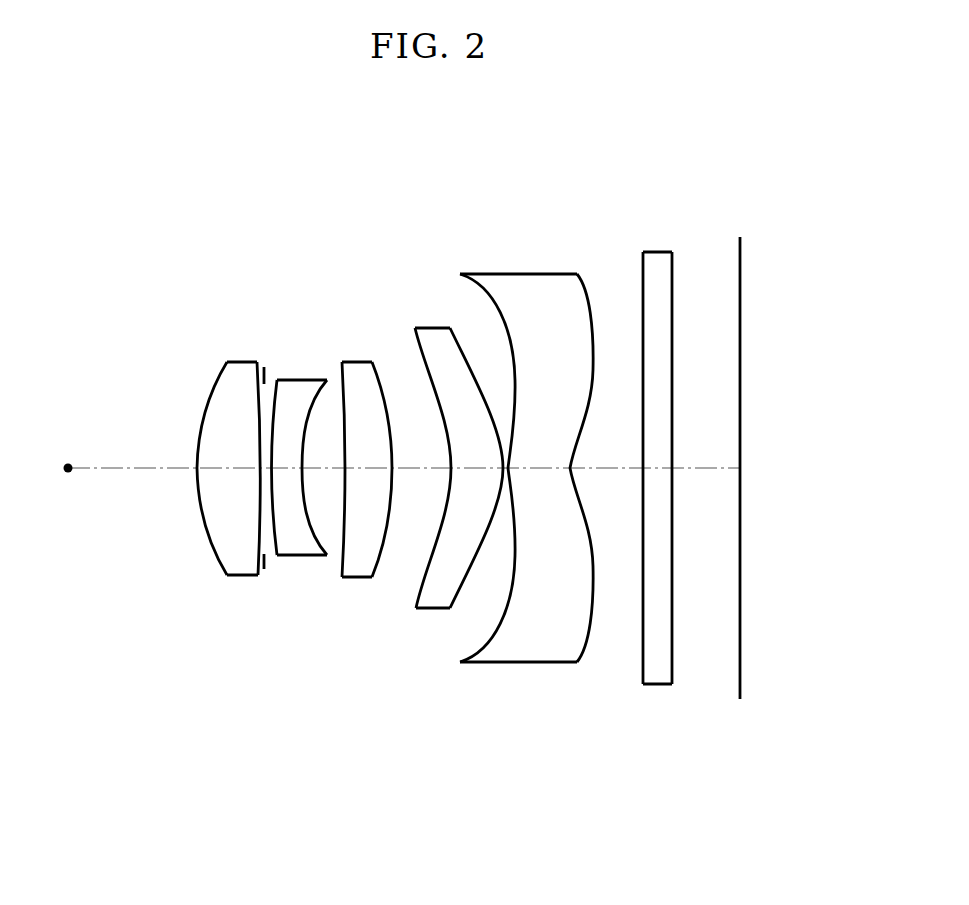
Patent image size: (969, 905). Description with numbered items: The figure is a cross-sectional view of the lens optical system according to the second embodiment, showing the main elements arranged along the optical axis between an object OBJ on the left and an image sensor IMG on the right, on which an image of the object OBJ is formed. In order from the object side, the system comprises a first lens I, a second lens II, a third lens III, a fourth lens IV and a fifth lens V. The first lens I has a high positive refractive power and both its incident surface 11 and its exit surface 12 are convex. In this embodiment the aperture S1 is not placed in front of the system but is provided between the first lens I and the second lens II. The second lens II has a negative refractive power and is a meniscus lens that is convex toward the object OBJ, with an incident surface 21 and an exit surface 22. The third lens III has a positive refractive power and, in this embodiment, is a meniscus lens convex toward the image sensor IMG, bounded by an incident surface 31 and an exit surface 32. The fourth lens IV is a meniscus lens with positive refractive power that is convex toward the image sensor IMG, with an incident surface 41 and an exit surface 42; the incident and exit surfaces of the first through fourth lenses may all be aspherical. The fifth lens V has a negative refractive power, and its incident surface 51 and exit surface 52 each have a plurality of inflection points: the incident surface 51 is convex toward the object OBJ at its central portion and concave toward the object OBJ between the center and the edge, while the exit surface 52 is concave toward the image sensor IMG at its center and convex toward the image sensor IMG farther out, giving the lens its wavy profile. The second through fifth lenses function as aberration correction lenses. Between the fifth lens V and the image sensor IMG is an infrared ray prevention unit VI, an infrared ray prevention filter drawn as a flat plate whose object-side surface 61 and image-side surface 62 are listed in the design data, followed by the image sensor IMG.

The object OBJ is at (68, 463).
The first lens I is at (211, 481).
The incident surface of the first lens 11 is at (208, 397).
The exit surface of the first lens 12 is at (257, 380).
The aperture S1 is at (264, 367).
The second lens II is at (304, 468).
The incident surface of the second lens 21 is at (280, 397).
The exit surface of the second lens 22 is at (317, 398).
The third lens III is at (362, 465).
The incident surface of the third lens 31 is at (348, 395).
The exit surface of the third lens 32 is at (383, 377).
The fourth lens IV is at (450, 471).
The incident surface of the fourth lens 41 is at (417, 357).
The exit surface of the fourth lens 42 is at (458, 342).
The fifth lens V is at (526, 483).
The incident surface of the fifth lens 51 is at (507, 297).
The exit surface of the fifth lens 52 is at (582, 302).
The infrared ray prevention unit VI is at (652, 489).
The object-side surface of the infrared ray prevention unit 61 is at (642, 288).
The image-side surface of the infrared ray prevention unit 62 is at (672, 288).
The image sensor IMG is at (740, 270).